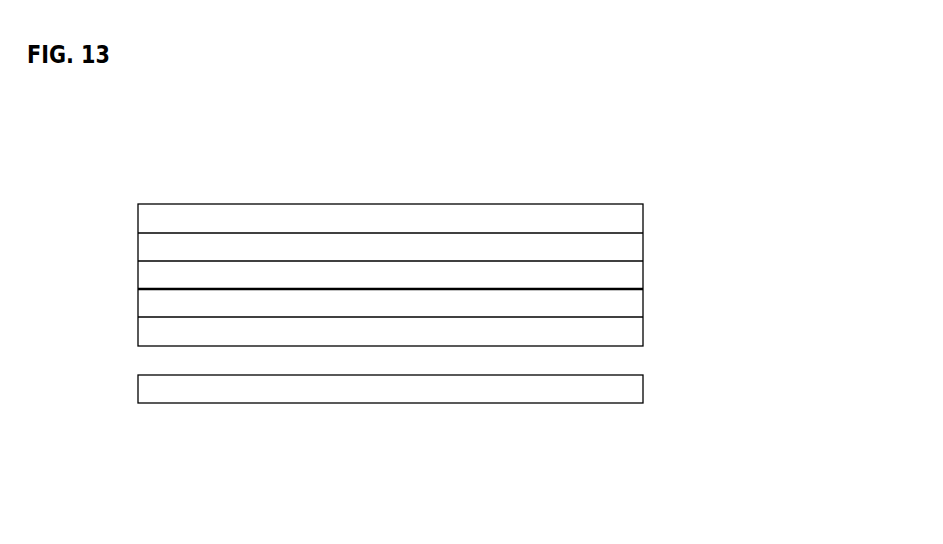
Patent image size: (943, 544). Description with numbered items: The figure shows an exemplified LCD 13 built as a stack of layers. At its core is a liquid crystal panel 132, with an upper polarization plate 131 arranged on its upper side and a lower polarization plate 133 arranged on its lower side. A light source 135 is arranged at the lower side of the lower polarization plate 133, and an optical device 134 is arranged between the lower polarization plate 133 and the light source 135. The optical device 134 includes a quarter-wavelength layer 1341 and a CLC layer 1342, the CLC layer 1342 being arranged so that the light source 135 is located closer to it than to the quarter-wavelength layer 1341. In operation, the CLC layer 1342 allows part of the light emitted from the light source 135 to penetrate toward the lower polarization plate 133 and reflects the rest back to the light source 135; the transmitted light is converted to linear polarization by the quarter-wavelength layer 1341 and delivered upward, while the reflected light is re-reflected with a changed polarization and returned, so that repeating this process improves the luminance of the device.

The LCD 13 is at (153, 177).
The upper polarization plate 131 is at (558, 218).
The liquid crystal panel 132 is at (635, 248).
The lower polarization plate 133 is at (153, 278).
The optical device 134 is at (760, 305).
The λ/4 wavelength layer 1341 is at (620, 303).
The CLC layer 1342 is at (628, 333).
The light source 135 is at (304, 390).